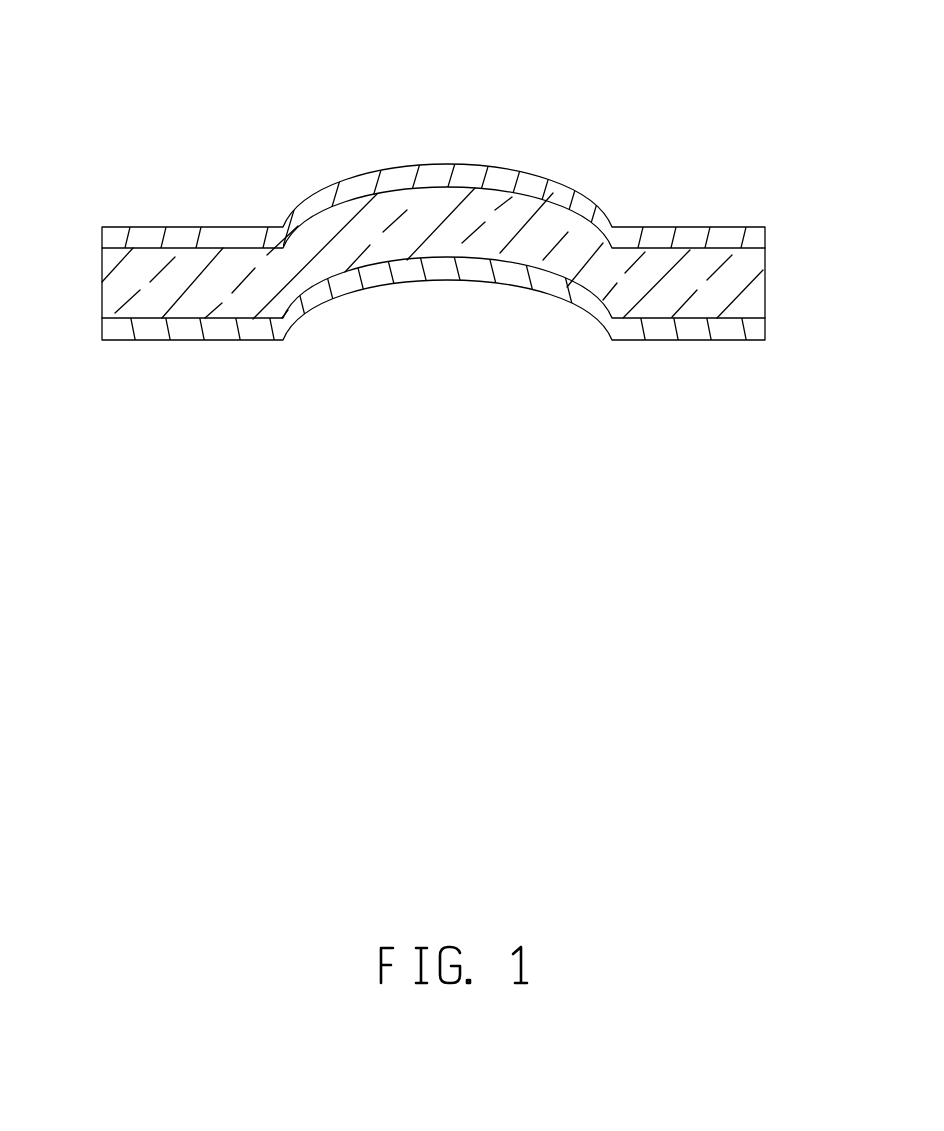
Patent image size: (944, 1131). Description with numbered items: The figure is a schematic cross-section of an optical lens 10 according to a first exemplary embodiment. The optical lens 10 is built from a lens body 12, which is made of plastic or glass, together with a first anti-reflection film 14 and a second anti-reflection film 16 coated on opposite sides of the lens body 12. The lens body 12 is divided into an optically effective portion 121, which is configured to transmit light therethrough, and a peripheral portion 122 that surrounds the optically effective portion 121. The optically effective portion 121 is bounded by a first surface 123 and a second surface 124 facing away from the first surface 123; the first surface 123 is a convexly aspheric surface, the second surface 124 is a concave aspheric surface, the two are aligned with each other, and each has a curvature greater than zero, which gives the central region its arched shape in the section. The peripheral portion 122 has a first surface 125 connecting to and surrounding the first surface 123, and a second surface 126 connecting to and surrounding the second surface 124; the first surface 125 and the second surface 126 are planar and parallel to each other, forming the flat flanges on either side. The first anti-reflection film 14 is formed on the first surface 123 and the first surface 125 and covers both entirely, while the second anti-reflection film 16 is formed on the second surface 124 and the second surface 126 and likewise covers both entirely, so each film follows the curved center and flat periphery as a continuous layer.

The optical lens 10 is at (196, 88).
The lens body 12 is at (432, 212).
The optically effective portion 121 is at (360, 238).
The peripheral portion 122 is at (222, 277).
The first surface 123 is at (537, 197).
The second surface 124 is at (328, 258).
The first surface 125 is at (718, 243).
The second surface 126 is at (690, 322).
The first anti-reflection film 14 is at (482, 209).
The second anti-reflection film 16 is at (447, 309).